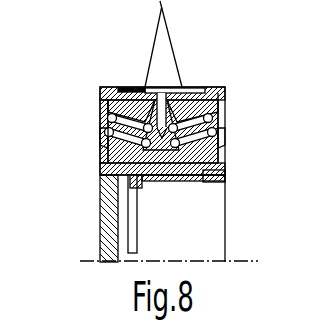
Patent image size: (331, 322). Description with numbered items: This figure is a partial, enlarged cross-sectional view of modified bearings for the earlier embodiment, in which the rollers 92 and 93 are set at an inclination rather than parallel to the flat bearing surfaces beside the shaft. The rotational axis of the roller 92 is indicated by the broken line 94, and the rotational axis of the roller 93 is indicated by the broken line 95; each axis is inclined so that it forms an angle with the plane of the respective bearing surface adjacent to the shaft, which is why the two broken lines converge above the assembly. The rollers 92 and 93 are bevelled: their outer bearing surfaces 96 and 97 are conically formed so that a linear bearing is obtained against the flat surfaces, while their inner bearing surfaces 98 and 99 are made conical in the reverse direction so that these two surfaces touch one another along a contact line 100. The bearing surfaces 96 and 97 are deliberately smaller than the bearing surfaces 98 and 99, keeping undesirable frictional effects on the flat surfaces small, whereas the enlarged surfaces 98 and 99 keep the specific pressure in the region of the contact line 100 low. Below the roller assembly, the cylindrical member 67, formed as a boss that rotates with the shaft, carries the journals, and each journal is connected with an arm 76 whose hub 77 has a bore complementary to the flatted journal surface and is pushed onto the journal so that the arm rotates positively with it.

The cylindrical member 67 is at (105, 222).
The arm 76 is at (132, 225).
The hub 77 is at (138, 181).
The roller 92 is at (106, 125).
The roller 93 is at (222, 125).
The broken line 94 is at (146, 63).
The broken line 95 is at (175, 64).
The bearing surface 96 is at (224, 138).
The bearing surface 97 is at (100, 138).
The bearing surface 98 is at (221, 106).
The bearing surface 99 is at (104, 110).
The contact line 100 is at (160, 88).